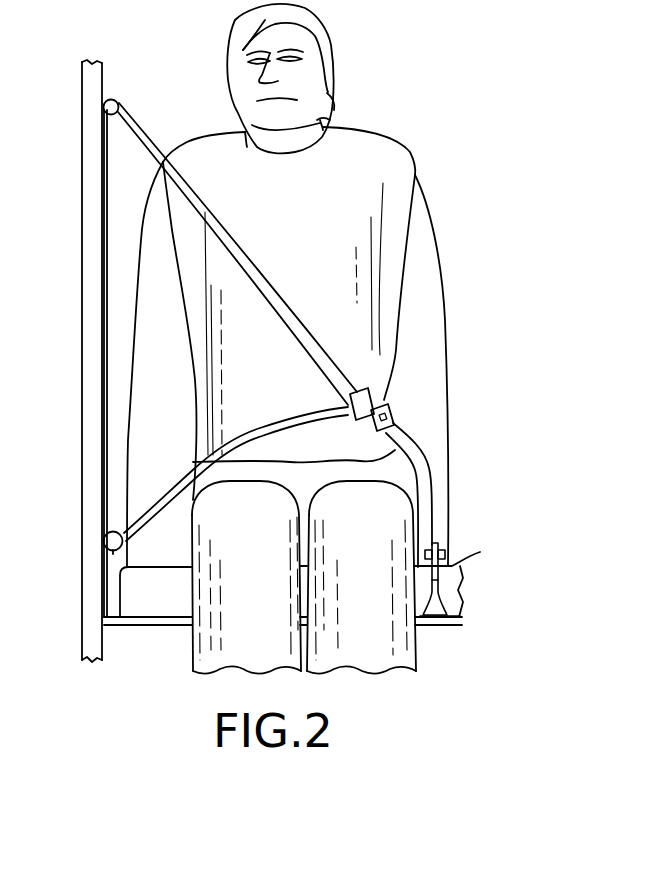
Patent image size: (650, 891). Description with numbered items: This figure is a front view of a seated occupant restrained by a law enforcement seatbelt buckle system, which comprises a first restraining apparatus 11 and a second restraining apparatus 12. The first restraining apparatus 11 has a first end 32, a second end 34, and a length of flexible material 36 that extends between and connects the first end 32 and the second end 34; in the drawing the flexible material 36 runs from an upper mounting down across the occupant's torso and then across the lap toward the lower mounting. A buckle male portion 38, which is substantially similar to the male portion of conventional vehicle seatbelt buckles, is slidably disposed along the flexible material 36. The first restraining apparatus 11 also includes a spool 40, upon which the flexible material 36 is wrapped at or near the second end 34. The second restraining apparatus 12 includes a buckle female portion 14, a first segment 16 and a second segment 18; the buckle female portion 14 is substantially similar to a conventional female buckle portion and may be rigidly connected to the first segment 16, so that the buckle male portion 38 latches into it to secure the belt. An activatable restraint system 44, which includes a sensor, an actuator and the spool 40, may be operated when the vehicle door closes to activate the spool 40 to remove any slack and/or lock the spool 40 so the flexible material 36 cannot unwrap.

The first restraining apparatus 11 is at (233, 331).
The second restraining apparatus 12 is at (322, 335).
The buckle female portion 14 is at (395, 410).
The first segment 16 is at (433, 491).
The second segment 18 is at (437, 578).
The first end 32 is at (100, 440).
The second end 34 is at (163, 492).
The length of flexible material 36 is at (258, 281).
The buckle male portion 38 is at (372, 383).
The spool 40 is at (104, 544).
The activatable restraint system 44 is at (110, 552).